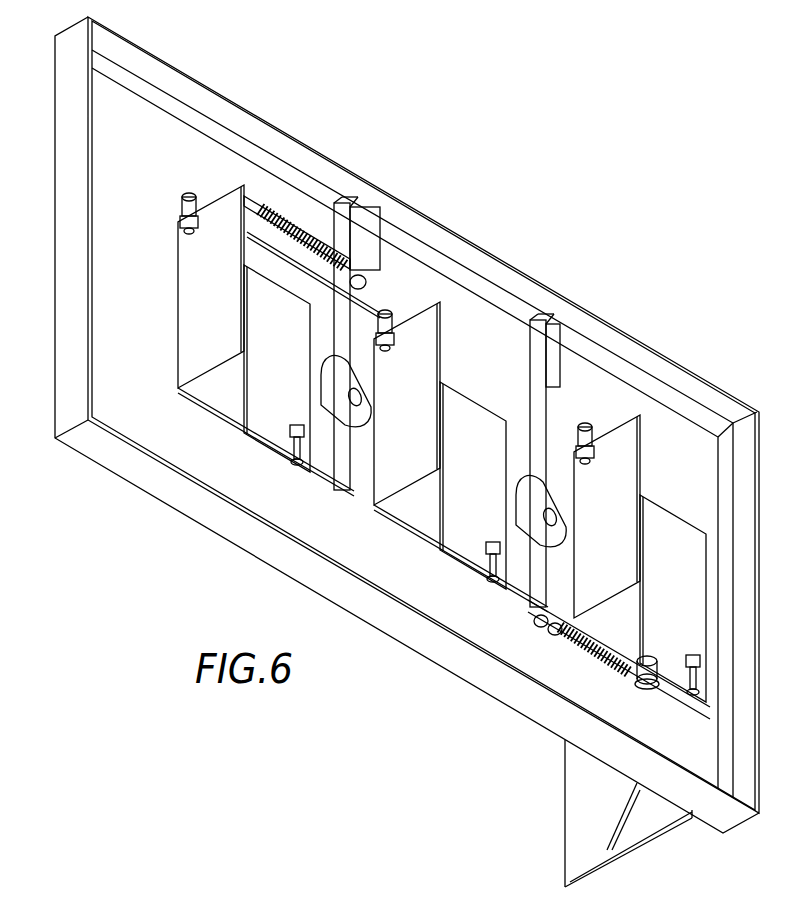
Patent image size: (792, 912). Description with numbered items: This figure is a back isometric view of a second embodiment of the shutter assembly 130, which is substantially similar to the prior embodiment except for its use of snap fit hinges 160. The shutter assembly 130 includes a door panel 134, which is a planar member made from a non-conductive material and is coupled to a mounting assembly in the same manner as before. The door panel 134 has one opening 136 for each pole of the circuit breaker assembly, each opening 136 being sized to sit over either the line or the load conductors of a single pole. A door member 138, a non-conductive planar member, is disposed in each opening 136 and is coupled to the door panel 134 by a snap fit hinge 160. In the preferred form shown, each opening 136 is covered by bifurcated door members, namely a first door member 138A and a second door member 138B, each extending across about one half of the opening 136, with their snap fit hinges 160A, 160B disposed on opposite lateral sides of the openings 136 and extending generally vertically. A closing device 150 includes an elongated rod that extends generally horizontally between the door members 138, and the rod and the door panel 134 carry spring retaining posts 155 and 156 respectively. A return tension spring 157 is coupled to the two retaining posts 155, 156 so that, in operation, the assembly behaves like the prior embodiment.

The shutter assembly 130 is at (447, 181).
The door panel 134 is at (207, 97).
The opening 136 is at (218, 396).
The door member 138 is at (450, 376).
The first door member 138A is at (188, 300).
The second door member 138B is at (265, 423).
The closing device 150 is at (161, 178).
The spring retaining post 155 is at (250, 215).
The spring retaining post 156 is at (364, 282).
The return tension spring 157 is at (297, 222).
The snap fit hinge 160 is at (293, 328).
The snap fit hinge 160A is at (180, 290).
The snap fit hinge 160B is at (312, 386).